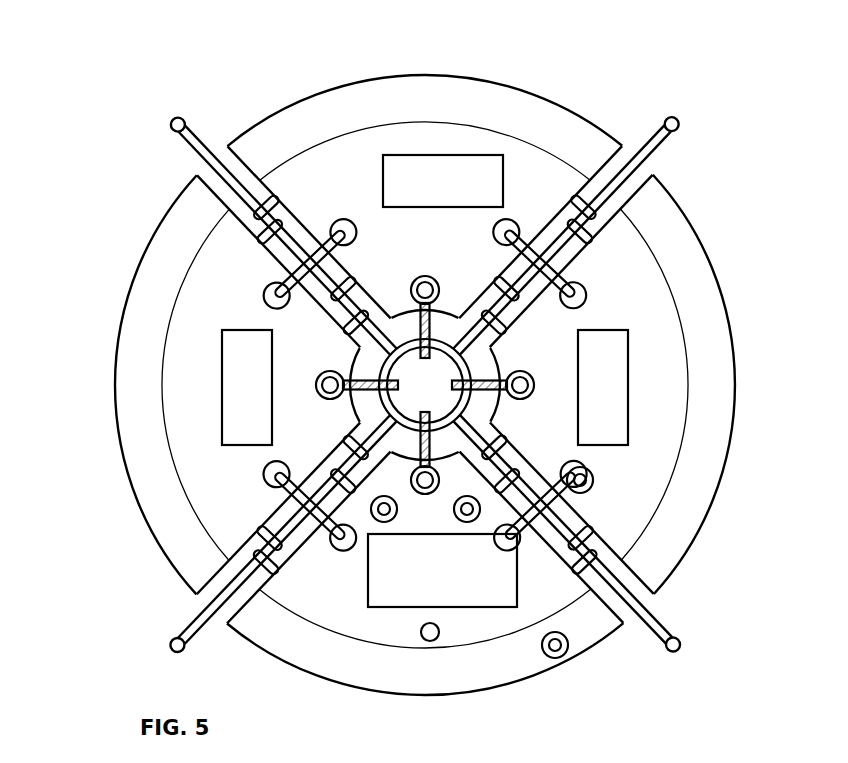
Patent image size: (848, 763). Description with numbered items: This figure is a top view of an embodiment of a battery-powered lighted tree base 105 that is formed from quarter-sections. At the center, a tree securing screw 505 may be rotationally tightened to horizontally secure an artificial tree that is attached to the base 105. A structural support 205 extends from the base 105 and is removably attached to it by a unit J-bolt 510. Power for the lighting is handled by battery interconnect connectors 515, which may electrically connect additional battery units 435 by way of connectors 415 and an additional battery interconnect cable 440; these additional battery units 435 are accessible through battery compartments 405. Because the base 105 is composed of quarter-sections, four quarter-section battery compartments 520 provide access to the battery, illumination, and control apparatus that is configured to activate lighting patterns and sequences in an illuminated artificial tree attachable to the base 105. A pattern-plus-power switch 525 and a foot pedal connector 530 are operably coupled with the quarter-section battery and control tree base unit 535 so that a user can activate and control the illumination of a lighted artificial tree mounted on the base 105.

The base 105 is at (647, 67).
The structural support 205 is at (680, 124).
The battery compartment 405 is at (390, 152).
The connector 415 is at (372, 503).
The additional battery unit 435 is at (432, 82).
The additional battery interconnect cable 440 is at (278, 283).
The tree securing screw 505 is at (535, 385).
The unit J-bolt 510 is at (645, 205).
The battery interconnect connector 515 is at (343, 220).
The quarter-section battery compartment 520 is at (368, 595).
The pattern-plus-power switch 525 is at (430, 642).
The foot pedal connector 530 is at (567, 652).
The quarter-section battery and control tree base unit 535 is at (402, 70).